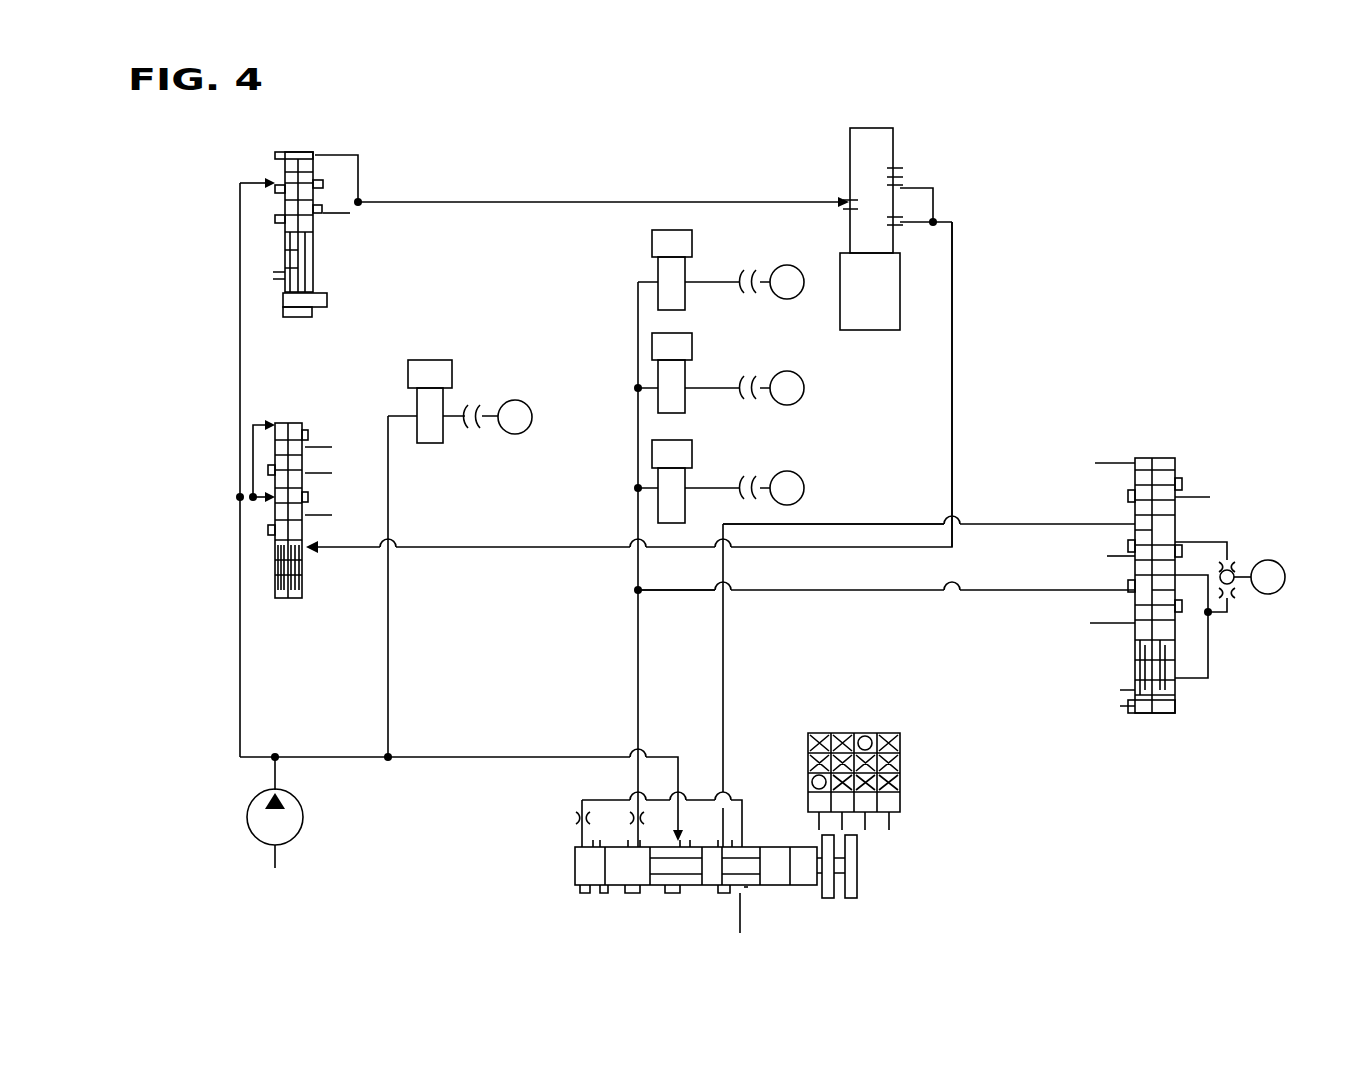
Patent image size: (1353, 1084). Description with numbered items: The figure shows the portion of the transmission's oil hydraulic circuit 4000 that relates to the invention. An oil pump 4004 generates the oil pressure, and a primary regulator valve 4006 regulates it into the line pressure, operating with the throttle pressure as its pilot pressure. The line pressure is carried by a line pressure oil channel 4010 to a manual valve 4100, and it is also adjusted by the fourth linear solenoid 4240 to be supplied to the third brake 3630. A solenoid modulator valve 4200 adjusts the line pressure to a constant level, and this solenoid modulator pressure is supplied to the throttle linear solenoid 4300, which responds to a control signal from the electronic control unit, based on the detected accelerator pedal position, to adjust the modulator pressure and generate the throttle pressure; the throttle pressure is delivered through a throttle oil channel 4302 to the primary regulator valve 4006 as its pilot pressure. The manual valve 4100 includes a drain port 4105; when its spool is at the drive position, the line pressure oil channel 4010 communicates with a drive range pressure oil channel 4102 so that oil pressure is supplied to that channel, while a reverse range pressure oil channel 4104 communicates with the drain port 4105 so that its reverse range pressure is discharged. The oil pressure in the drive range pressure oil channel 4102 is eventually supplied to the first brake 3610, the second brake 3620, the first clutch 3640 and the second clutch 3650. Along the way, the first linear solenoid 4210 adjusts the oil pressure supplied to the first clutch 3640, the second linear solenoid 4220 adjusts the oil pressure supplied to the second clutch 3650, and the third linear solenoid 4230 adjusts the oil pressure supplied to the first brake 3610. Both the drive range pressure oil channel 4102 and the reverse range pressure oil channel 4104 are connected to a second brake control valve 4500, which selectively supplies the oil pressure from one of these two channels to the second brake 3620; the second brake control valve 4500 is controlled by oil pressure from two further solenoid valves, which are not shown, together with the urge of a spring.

The oil hydraulic circuit 4000 is at (637, 124).
The solenoid modulator valve 4200 is at (294, 322).
The primary regulator valve 4006 is at (282, 600).
The SL4 linear solenoid 4240 is at (426, 360).
The B3 brake 3630 is at (510, 398).
The SL1 linear solenoid 4210 is at (692, 243).
The C1 clutch 3640 is at (784, 265).
The SL2 linear solenoid 4220 is at (692, 348).
The C2 clutch 3650 is at (786, 370).
The SL3 linear solenoid 4230 is at (692, 455).
The B1 brake 3610 is at (786, 475).
The SLT linear solenoid 4300 is at (868, 332).
The SLT oil channel 4302 is at (952, 440).
The R range pressure oil channel 4104 is at (1020, 523).
The D range pressure oil channel 4102 is at (1020, 590).
The B2 control valve 4500 is at (1185, 470).
The B2 brake 3620 is at (1264, 608).
The line pressure oil channel 4010 is at (308, 756).
The oil pump 4004 is at (305, 801).
The manual valve 4100 is at (566, 873).
The drain port 4105 is at (746, 899).